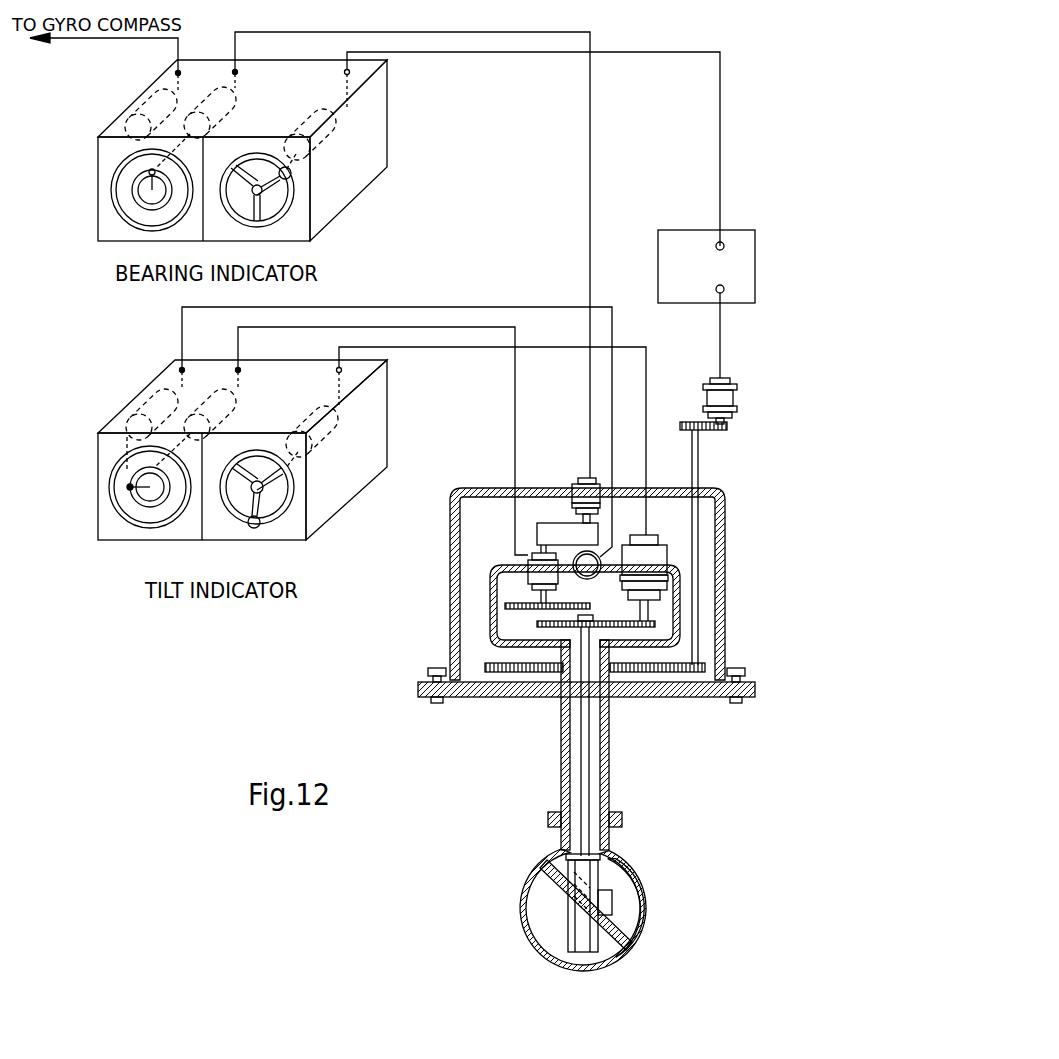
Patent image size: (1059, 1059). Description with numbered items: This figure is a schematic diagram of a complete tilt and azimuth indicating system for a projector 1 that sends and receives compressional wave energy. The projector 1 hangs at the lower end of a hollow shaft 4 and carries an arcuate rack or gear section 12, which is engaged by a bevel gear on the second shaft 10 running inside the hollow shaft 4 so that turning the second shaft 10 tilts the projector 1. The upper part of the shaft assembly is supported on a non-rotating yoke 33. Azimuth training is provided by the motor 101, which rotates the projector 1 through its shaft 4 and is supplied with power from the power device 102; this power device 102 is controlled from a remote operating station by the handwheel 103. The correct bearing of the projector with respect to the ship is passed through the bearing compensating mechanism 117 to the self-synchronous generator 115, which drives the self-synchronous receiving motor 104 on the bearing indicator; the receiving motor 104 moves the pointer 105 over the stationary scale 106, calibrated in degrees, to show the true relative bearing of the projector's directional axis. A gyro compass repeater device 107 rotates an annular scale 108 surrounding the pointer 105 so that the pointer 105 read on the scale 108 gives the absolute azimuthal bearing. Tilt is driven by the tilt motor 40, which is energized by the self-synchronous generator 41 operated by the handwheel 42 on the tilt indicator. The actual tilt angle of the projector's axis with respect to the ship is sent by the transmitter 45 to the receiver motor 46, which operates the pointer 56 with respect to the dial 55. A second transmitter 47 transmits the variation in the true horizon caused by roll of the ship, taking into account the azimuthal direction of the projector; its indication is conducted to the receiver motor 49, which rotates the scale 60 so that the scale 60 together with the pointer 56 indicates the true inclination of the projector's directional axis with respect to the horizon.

The projector 1 is at (590, 945).
The hollow shaft 4 is at (608, 770).
The second shaft 10 is at (590, 728).
The arcuate rack or gear section 12 is at (645, 908).
The non-rotating yoke 33 is at (700, 695).
The tilt motor 40 is at (652, 553).
The self-synchronous generator 41 is at (320, 437).
The handwheel 42 is at (283, 505).
The transmitter 45 is at (537, 568).
The receiver motor 46 is at (230, 404).
The transmitter 47 is at (593, 577).
The receiver motor 49 is at (165, 400).
The dial 55 is at (155, 492).
The pointer 56 is at (131, 490).
The scale 60 is at (127, 490).
The motor 101 is at (705, 395).
The power device 102 is at (675, 245).
The handwheel 103 is at (292, 208).
The self-synchronous receiving motor 104 is at (207, 100).
The pointer 105 is at (150, 174).
The stationary scale 106 is at (152, 188).
The gyro compass repeater device 107 is at (153, 106).
The annular scale 108 is at (130, 178).
The self-synchronous generator 115 is at (585, 497).
The bearing compensating mechanism 117 is at (545, 530).